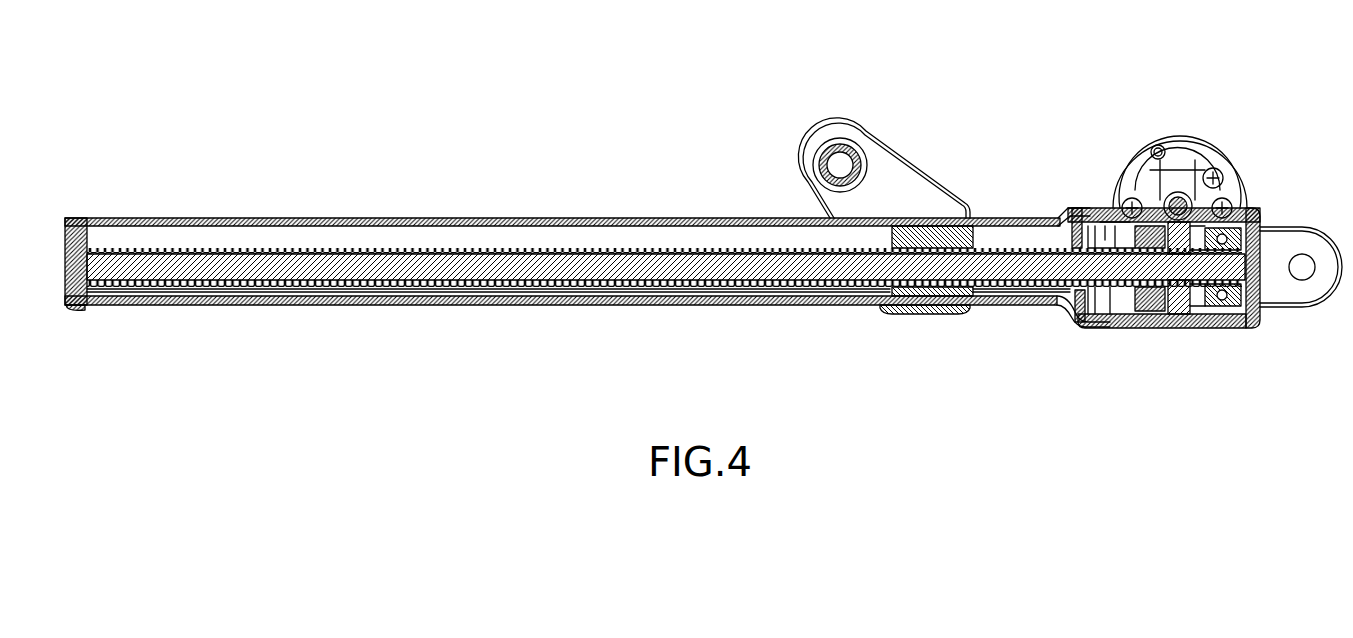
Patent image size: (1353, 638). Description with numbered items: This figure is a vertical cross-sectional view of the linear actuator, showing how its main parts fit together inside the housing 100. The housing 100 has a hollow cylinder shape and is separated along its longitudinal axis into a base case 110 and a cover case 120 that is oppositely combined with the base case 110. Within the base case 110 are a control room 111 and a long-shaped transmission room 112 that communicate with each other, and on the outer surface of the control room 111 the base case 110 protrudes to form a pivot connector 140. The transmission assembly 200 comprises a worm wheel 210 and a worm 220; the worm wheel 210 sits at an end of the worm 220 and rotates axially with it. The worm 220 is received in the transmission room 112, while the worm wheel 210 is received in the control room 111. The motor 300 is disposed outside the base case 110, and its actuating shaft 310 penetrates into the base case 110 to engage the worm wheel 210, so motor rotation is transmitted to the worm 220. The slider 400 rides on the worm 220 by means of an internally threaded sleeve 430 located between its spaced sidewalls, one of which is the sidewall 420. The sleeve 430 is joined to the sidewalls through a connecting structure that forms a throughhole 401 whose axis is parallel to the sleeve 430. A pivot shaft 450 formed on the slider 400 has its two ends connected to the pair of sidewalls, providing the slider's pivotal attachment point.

The housing 100 is at (1192, 281).
The base case 110 is at (1266, 296).
The control room 111 is at (1268, 208).
The transmission room 112 is at (523, 218).
The cover case 120 is at (1163, 298).
The pivot connector 140 is at (1306, 236).
The transmission assembly 200 is at (666, 223).
The worm 220 is at (378, 248).
The worm wheel 210 is at (1128, 188).
The motor 300 is at (1179, 151).
The actuating shaft 310 is at (1157, 146).
The slider 400 is at (863, 211).
The throughhole 401 is at (972, 300).
The sidewall 420 is at (910, 170).
The sleeve 430 is at (945, 225).
The pivot shaft 450 is at (815, 150).